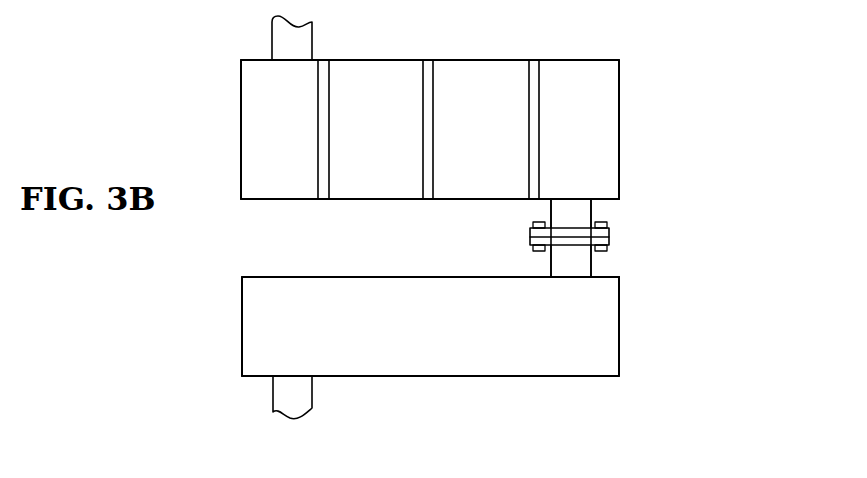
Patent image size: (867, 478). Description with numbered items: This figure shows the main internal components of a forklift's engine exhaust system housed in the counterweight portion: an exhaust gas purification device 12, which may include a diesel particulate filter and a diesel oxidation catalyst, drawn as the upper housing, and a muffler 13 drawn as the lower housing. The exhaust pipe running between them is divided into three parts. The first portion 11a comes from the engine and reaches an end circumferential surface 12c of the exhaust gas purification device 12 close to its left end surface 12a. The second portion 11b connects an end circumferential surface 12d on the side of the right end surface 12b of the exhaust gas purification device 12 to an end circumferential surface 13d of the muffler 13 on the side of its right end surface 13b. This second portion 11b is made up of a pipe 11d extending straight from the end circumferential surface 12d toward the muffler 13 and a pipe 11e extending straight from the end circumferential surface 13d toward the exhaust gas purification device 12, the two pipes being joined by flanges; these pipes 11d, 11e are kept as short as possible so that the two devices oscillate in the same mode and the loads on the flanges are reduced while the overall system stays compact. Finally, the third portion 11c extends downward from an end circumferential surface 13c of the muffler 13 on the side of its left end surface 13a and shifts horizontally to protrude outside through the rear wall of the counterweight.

The first portion 11a is at (272, 40).
The second portion 11b is at (427, 247).
The third portion 11c is at (275, 397).
The pipe 11d is at (554, 210).
The pipe 11e is at (554, 265).
The exhaust gas purification device 12 is at (492, 75).
The left end surface 12a is at (241, 133).
The right end surface 12b is at (619, 130).
The end circumferential surface 12c is at (318, 60).
The end circumferential surface 12d is at (610, 200).
The muffler 13 is at (465, 361).
The left end surface 13a is at (242, 328).
The right end surface 13b is at (619, 327).
The end circumferential surface 13c is at (323, 378).
The end circumferential surface 13d is at (613, 278).